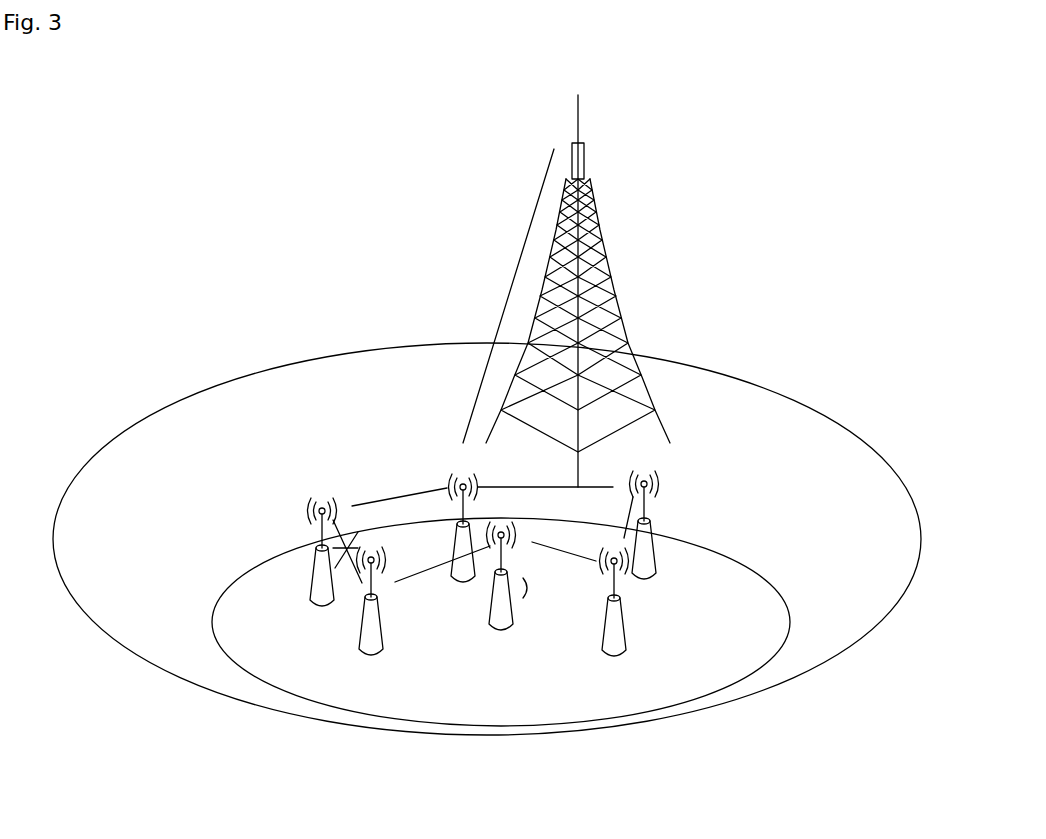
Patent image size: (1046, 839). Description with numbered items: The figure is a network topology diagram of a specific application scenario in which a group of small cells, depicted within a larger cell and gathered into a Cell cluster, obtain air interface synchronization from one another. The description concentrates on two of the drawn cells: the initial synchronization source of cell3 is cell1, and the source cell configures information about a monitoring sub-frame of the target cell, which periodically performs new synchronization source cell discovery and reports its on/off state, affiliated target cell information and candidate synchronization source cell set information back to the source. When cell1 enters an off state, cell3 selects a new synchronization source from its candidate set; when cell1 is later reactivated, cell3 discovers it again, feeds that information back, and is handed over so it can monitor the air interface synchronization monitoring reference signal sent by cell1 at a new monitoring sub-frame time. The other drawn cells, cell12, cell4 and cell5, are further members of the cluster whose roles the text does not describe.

The cell (macro cell coverage area) cell is at (487, 539).
The element cell1 is at (286, 552).
The element cell3 is at (397, 612).
The cell 12 small cell base station cell12 is at (520, 590).
The cell 4 small cell base station cell4 is at (648, 608).
The cell 5 small cell base station cell5 is at (683, 538).
The cell cluster Cell cluster is at (755, 647).